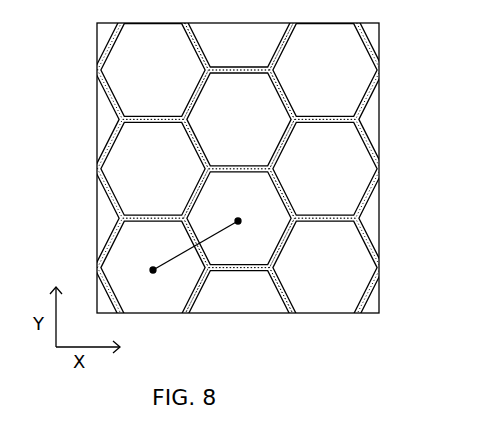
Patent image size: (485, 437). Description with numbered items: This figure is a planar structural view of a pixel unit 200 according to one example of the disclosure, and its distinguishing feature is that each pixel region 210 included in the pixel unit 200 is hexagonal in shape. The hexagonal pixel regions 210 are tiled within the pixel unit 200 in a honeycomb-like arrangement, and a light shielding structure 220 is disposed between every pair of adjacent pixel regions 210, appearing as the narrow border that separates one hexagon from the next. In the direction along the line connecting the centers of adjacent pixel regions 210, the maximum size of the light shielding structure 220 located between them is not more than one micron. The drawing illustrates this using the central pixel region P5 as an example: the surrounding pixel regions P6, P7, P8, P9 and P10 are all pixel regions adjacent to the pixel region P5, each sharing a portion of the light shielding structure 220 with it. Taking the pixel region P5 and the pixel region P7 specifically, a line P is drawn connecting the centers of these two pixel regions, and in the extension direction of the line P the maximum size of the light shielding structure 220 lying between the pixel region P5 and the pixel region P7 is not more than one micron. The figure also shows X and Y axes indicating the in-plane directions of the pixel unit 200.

The pixel unit 200 is at (97, 262).
The pixel region 210 is at (123, 69).
The light shielding structure 220 is at (135, 119).
The line connecting centers P is at (196, 238).
The pixel region P5 is at (250, 235).
The pixel region P6 is at (153, 168).
The pixel region P7 is at (138, 273).
The pixel region P8 is at (325, 267).
The pixel region P9 is at (325, 168).
The pixel region P10 is at (239, 119).